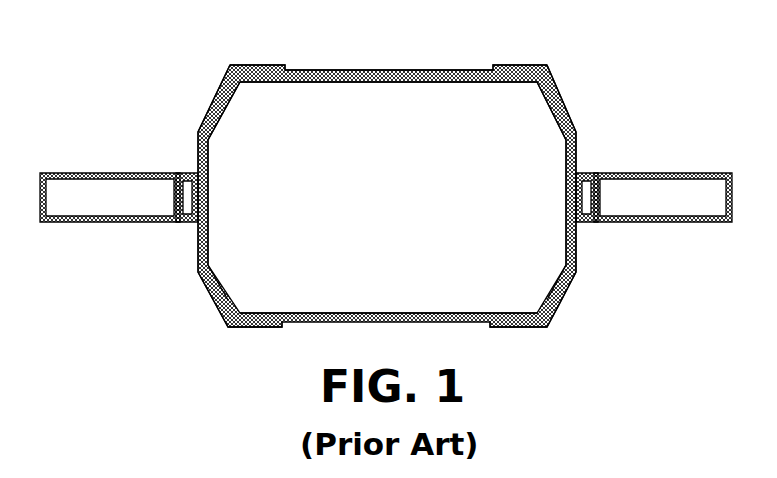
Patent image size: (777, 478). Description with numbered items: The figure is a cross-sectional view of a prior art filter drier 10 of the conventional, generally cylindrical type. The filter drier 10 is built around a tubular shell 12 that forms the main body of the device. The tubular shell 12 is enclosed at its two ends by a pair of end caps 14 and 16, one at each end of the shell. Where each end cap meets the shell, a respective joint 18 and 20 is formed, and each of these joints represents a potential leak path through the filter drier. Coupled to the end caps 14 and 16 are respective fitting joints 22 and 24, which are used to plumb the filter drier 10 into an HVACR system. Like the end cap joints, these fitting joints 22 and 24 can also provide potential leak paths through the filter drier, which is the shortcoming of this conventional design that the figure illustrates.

The filter drier 10 is at (634, 80).
The tubular shell 12 is at (308, 316).
The end cap 14 is at (198, 135).
The end cap 16 is at (573, 150).
The joint 18 is at (283, 68).
The joint 20 is at (493, 70).
The fitting joint 22 is at (178, 220).
The fitting joint 24 is at (587, 220).